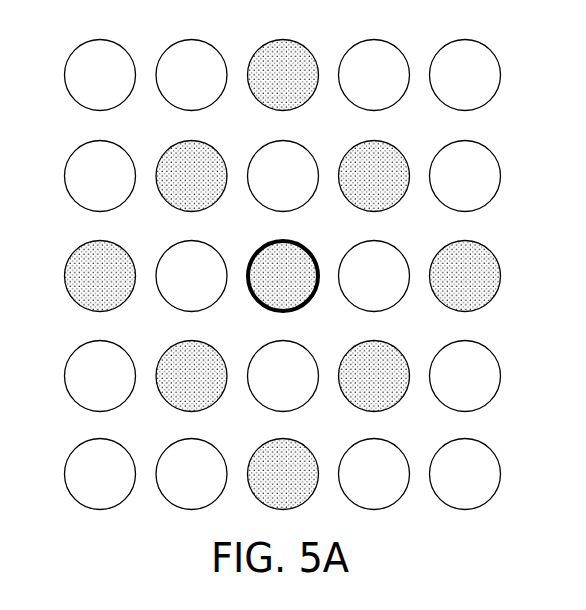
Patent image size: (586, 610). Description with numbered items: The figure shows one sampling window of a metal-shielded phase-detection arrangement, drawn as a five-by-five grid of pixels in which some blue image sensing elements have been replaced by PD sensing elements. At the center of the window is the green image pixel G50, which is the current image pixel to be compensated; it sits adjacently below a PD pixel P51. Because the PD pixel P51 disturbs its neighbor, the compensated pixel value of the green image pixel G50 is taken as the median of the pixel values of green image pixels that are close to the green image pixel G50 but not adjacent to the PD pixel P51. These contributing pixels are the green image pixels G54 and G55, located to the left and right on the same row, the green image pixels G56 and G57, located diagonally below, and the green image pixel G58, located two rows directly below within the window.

The green image pixel G50 is at (283, 276).
The PD pixel P51 is at (283, 176).
The green image pixel G54 is at (100, 276).
The green image pixel G55 is at (465, 276).
The green image pixel G56 is at (191, 376).
The green image pixel G57 is at (374, 376).
The green image pixel G58 is at (283, 474).